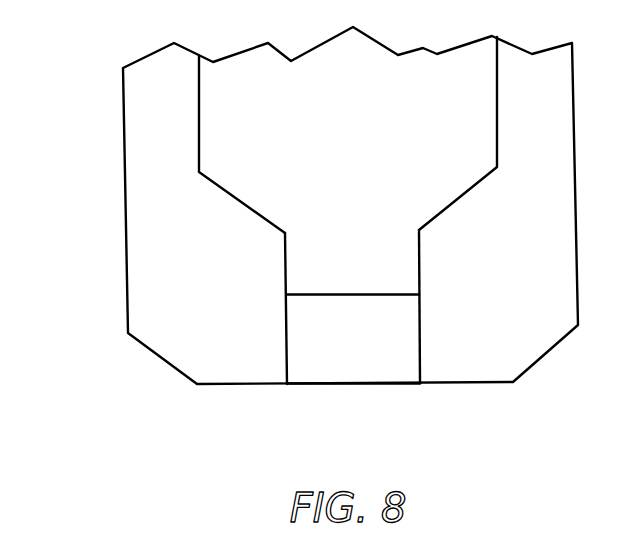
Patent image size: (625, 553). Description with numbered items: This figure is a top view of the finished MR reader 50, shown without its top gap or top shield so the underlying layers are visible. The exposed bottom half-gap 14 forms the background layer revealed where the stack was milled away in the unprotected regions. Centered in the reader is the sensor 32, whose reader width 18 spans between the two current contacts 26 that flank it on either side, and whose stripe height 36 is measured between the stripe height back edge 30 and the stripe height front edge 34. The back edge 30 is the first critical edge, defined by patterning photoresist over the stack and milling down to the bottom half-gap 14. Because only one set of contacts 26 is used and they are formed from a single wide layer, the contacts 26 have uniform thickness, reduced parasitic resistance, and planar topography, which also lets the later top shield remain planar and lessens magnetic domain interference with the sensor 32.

The bottom half-gap 14 is at (330, 126).
The reader width 18 is at (419, 276).
The current contacts 26 is at (166, 271).
The stripe height back edge 30 is at (306, 296).
The sensor 32 is at (354, 345).
The stripe height front edge 34 is at (333, 385).
The stripe height 36 is at (395, 295).
The MR reader 50 is at (140, 390).